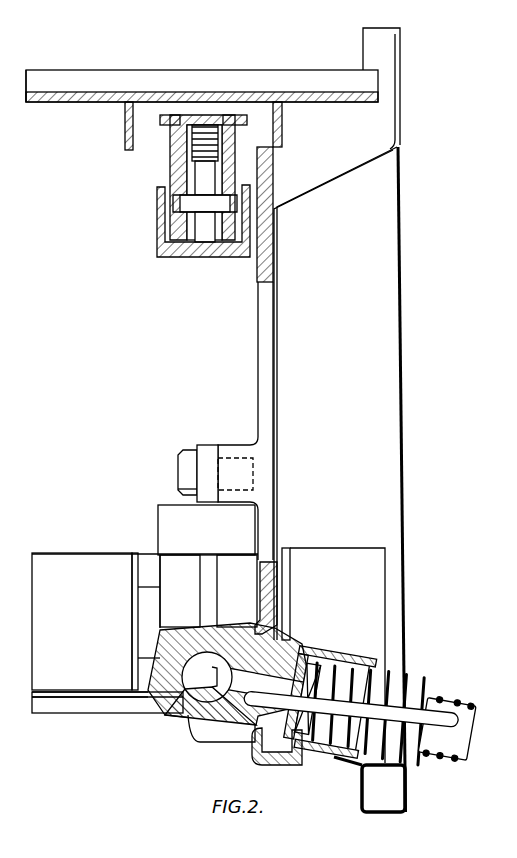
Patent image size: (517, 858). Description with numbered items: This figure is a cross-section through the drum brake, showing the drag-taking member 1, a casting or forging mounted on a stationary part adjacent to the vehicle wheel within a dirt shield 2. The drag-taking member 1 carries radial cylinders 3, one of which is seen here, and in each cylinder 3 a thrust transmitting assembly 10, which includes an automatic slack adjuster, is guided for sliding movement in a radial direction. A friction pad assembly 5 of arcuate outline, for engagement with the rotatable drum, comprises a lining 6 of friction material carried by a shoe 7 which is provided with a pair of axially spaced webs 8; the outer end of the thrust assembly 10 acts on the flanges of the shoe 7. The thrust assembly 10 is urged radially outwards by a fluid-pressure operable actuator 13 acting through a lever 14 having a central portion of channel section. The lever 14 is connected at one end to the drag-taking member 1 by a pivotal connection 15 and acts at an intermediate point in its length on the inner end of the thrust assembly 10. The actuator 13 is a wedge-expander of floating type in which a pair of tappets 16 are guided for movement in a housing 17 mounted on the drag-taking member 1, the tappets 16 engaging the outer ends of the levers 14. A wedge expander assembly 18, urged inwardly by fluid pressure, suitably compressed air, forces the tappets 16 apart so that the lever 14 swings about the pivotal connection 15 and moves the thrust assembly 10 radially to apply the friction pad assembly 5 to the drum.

The drag-taking member 1 is at (273, 250).
The dirt shield 2 is at (399, 110).
The radial cylinder 3 is at (179, 162).
The friction pad assembly 5 is at (205, 84).
The lining 6 is at (108, 82).
The shoe 7 is at (43, 612).
The web 8 is at (127, 127).
The thrust transmitting assembly 10 is at (184, 209).
The fluid-pressure operable actuator 13 is at (298, 645).
The lever 14 is at (207, 255).
The pivotal connection 15 is at (183, 471).
The tappet 16 is at (190, 715).
The housing 17 is at (216, 722).
The wedge expander assembly 18 is at (256, 732).